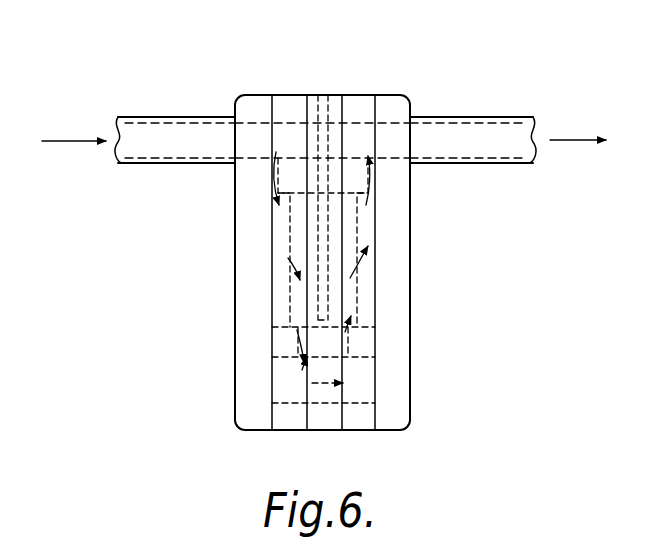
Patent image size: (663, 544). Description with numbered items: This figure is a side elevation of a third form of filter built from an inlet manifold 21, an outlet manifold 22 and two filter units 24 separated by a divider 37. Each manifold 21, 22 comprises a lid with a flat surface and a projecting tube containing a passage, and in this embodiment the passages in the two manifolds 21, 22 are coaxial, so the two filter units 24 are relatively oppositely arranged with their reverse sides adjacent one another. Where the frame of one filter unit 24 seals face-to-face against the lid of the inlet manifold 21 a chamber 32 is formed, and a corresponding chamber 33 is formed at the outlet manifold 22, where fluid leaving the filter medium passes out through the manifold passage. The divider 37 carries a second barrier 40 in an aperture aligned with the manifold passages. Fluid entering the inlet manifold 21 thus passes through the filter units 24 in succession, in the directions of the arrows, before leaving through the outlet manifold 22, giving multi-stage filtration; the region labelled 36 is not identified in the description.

The inlet manifold 21 is at (231, 112).
The outlet manifold 22 is at (418, 98).
The filter unit 24 is at (277, 103).
The second barrier 40 is at (318, 95).
The chamber 32 is at (272, 233).
The chamber 33 is at (367, 226).
The lower chamber 36 is at (340, 293).
The divider 37 is at (318, 422).